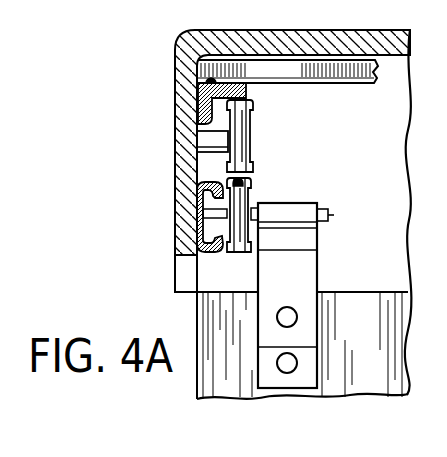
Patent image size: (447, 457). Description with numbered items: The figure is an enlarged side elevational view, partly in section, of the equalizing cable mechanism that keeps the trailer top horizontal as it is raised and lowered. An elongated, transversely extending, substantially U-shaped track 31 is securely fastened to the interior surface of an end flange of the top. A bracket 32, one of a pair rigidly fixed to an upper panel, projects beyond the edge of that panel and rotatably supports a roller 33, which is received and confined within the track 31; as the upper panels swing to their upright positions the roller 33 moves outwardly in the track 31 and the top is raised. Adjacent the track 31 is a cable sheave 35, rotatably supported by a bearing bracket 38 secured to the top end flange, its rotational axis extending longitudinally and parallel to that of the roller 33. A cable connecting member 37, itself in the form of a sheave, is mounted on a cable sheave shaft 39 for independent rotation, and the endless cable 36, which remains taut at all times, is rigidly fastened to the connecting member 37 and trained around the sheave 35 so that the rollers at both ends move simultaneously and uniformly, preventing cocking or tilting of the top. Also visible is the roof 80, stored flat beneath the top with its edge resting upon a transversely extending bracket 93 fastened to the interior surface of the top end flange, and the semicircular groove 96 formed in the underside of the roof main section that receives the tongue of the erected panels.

The roof 80 is at (315, 75).
The semicircular groove 96 is at (213, 63).
The bracket 93 is at (200, 100).
The bearing bracket 38 is at (213, 141).
The cable sheave 35 is at (252, 125).
The endless cable 36 is at (241, 181).
The cable connecting member 37 is at (250, 192).
The track 31 is at (200, 202).
The roller 33 is at (210, 223).
The bracket 32 is at (300, 252).
The cable sheave shaft 39 is at (334, 215).